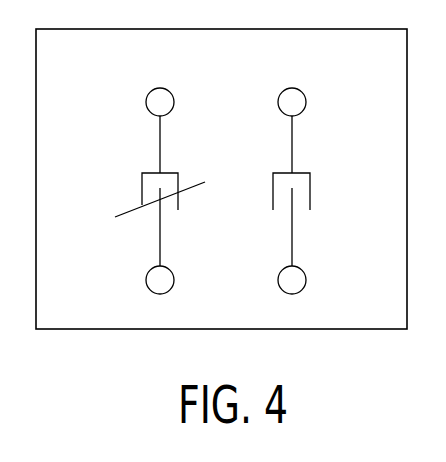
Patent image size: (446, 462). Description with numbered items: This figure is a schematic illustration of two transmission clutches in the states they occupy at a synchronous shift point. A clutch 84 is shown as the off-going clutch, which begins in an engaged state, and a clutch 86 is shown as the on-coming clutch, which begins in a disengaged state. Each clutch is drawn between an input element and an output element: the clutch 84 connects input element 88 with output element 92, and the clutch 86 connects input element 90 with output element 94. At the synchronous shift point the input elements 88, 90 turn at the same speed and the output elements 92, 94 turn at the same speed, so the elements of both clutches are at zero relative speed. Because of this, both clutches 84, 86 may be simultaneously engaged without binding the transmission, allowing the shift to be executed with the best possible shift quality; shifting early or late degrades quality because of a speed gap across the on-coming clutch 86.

The clutch 84 is at (142, 200).
The clutch 86 is at (311, 190).
The input element 88 is at (158, 87).
The input element 90 is at (293, 87).
The output element 92 is at (151, 270).
The output element 94 is at (302, 270).